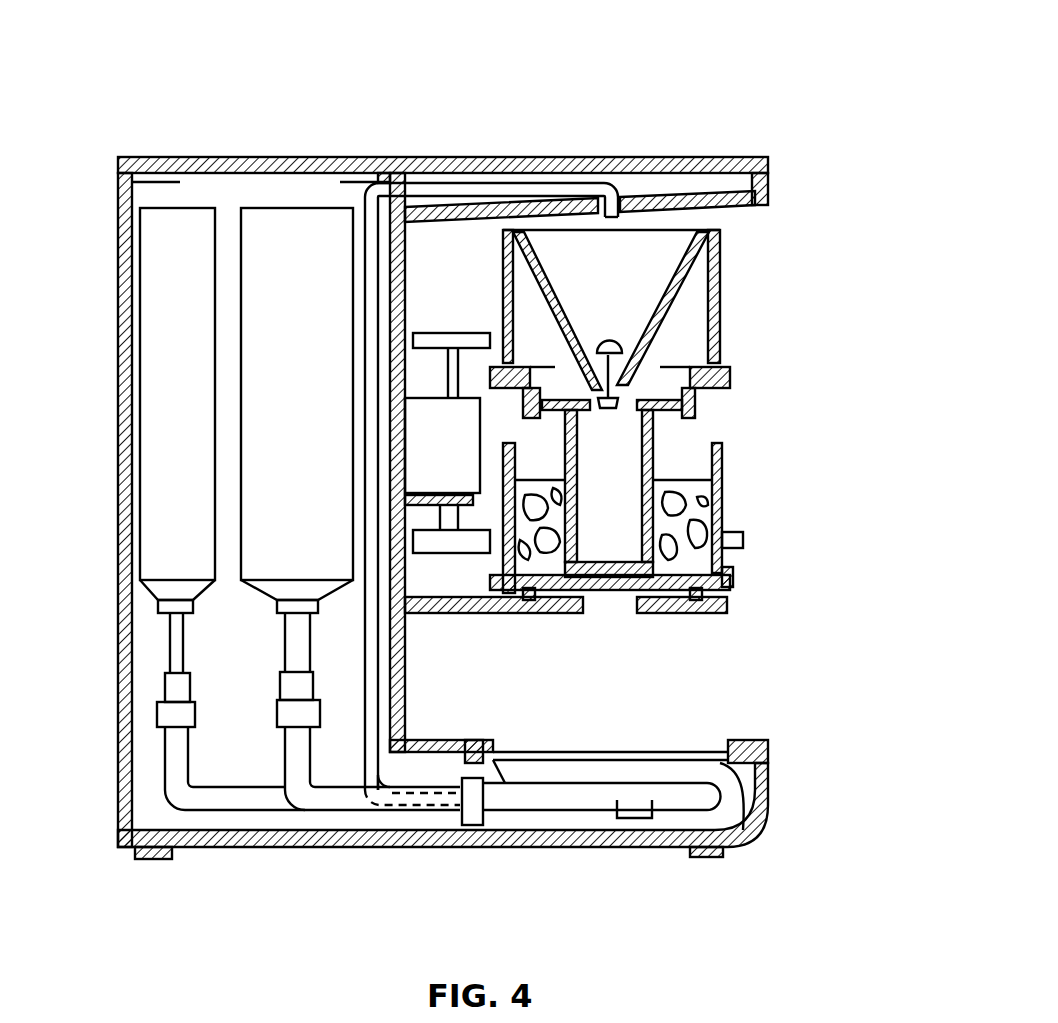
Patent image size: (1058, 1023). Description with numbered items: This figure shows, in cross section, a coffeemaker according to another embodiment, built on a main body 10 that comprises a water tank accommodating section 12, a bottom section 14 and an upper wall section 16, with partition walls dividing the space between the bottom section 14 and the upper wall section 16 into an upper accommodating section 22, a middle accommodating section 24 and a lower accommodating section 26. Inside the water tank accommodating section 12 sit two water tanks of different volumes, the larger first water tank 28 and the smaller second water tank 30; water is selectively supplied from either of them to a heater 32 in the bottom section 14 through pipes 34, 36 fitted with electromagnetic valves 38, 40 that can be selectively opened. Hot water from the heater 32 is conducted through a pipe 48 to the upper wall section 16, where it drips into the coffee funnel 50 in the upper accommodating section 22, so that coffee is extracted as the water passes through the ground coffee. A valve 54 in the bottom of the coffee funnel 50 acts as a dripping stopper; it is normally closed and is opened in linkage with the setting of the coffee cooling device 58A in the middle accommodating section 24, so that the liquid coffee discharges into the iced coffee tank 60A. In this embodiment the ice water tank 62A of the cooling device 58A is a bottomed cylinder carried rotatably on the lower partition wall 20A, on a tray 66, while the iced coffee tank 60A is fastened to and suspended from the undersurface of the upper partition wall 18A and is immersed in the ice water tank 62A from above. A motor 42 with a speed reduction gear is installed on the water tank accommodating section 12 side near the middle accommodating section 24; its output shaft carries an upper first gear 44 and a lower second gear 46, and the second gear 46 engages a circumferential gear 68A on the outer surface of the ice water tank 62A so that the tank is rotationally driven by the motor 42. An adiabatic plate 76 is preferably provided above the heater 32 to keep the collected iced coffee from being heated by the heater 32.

The main body 10 is at (240, 848).
The water tank accommodating section 12 is at (118, 240).
The bottom section 14 is at (770, 785).
The upper wall section 16 is at (668, 157).
The upper partition wall 18A is at (738, 408).
The lower partition wall 20A is at (722, 607).
The upper accommodating section 22 is at (764, 229).
The middle accommodating section 24 is at (748, 399).
The lower accommodating section 26 is at (736, 676).
The first water tank 28 is at (237, 412).
The second water tank 30 is at (118, 333).
The heater 32 is at (573, 805).
The pipe 34 is at (282, 633).
The pipe 36 is at (170, 632).
The electromagnetic valve 38 is at (277, 713).
The electromagnetic valve 40 is at (157, 712).
The motor 42 is at (427, 470).
The first gear 44 is at (450, 333).
The second gear 46 is at (465, 553).
The pipe 48 is at (486, 183).
The coffee funnel 50 is at (720, 285).
The valve 54 is at (608, 343).
The coffee cooling device 58A is at (727, 466).
The iced coffee tank 60A is at (655, 437).
The ice water tank 62A is at (722, 492).
The tray 66 is at (733, 572).
The circumferential gear 68A is at (743, 540).
The adiabatic plate 76 is at (725, 778).